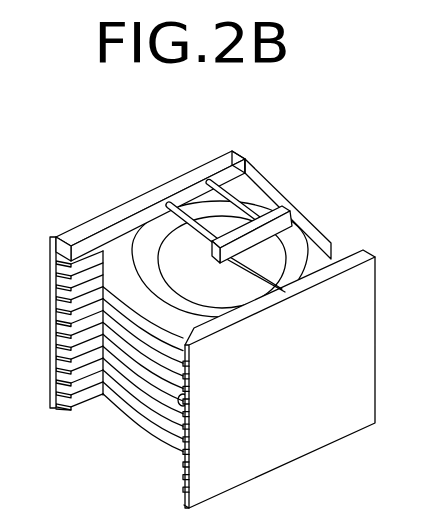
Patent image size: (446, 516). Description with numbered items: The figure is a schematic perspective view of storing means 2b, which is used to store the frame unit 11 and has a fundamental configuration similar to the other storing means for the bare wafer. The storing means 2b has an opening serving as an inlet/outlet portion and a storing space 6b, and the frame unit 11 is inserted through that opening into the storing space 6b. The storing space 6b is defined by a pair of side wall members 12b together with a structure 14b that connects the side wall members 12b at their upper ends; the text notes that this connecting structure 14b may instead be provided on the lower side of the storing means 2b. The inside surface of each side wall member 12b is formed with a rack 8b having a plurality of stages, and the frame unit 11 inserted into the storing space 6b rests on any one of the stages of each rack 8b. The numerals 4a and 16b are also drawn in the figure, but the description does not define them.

The storing means 2b is at (114, 202).
The coil 4a is at (192, 411).
The storing space 6b is at (133, 440).
The rack 8b is at (80, 360).
The frame unit 11 is at (293, 209).
The side wall member 12b is at (50, 296).
The structure 14b is at (241, 186).
The cross bar 16b is at (262, 218).